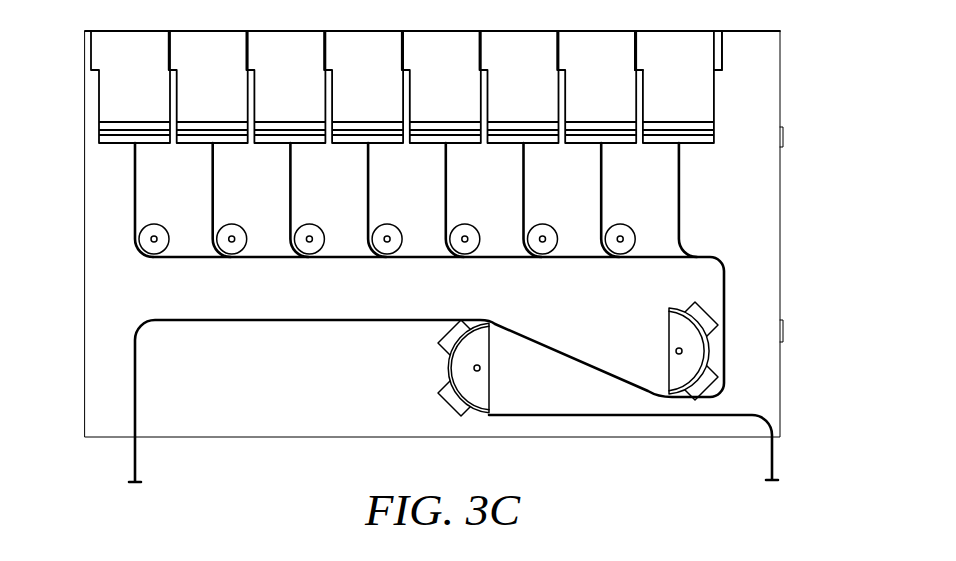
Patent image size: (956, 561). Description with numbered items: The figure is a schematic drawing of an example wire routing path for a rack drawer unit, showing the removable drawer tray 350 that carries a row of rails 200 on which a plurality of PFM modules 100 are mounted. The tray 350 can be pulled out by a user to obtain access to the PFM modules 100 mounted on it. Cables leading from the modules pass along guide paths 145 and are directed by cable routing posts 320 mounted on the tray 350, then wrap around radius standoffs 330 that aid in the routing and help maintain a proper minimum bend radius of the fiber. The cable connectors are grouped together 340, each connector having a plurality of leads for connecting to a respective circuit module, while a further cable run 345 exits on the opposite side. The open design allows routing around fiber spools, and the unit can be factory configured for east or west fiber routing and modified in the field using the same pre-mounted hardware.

The PFM module 100 is at (287, 45).
The rail 200 is at (640, 38).
The web guide stem 145 is at (135, 200).
The cable routing post 320 is at (155, 230).
The radius standoff 330 is at (678, 337).
The grouped cable connectors 340 is at (610, 415).
The upper web belt 345 is at (135, 455).
The drawer tray 350 is at (755, 235).